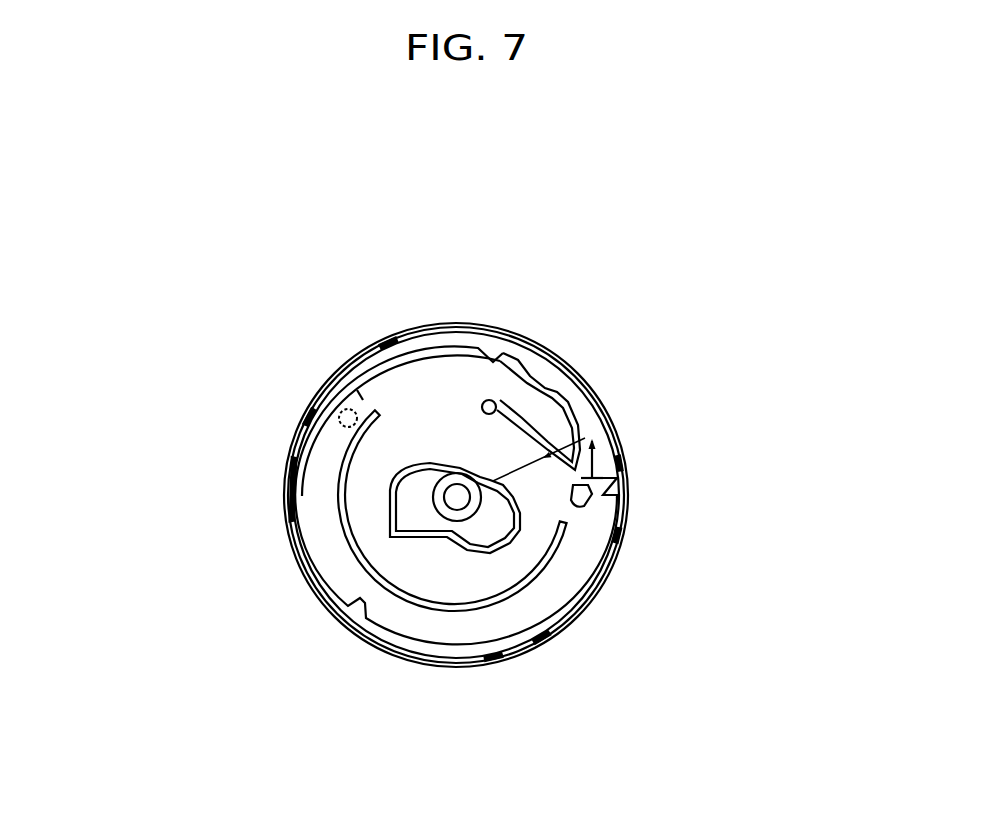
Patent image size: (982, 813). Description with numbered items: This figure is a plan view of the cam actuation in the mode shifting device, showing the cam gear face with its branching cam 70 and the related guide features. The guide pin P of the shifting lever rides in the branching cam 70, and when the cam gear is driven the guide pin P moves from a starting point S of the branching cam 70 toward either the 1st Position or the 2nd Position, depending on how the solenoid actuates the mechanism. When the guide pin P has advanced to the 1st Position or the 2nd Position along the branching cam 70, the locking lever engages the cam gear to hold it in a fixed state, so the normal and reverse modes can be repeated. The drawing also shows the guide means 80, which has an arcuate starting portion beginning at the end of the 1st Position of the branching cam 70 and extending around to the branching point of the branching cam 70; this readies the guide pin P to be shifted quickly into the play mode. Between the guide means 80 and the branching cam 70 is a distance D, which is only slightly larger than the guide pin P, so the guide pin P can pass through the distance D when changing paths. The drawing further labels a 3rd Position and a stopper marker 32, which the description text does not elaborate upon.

The branching cam 70 is at (477, 347).
The stopper arrow marker 32 is at (592, 440).
The guide means 80 is at (447, 603).
The distance D is at (388, 382).
The starting point S is at (613, 478).
The guide pin P is at (588, 501).
The first position 1st Position is at (487, 396).
The second position 2nd Position is at (551, 371).
The third position 3rd Position is at (340, 407).